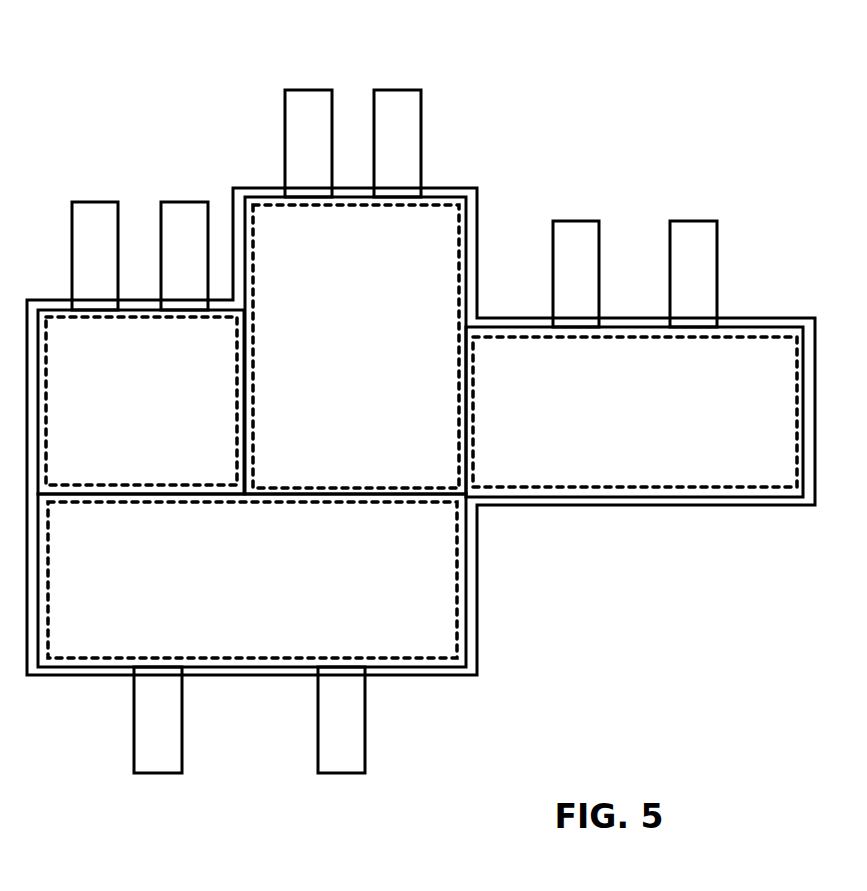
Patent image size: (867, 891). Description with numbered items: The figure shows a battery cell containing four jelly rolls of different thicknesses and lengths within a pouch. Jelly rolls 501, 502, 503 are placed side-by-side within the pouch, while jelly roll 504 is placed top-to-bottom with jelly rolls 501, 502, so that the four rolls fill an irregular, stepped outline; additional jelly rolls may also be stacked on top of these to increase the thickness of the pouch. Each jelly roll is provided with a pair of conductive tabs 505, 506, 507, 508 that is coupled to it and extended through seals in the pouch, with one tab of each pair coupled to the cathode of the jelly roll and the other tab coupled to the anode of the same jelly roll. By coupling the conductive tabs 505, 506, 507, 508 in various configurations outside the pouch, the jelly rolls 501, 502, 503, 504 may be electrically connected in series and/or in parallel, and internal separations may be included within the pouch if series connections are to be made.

The jelly roll 501 is at (141, 402).
The jelly roll 502 is at (355, 345).
The jelly roll 503 is at (634, 412).
The jelly roll 504 is at (252, 580).
The pair of conductive tabs 505 is at (182, 205).
The pair of conductive tabs 506 is at (395, 95).
The pair of conductive tabs 507 is at (678, 223).
The pair of conductive tabs 508 is at (182, 773).